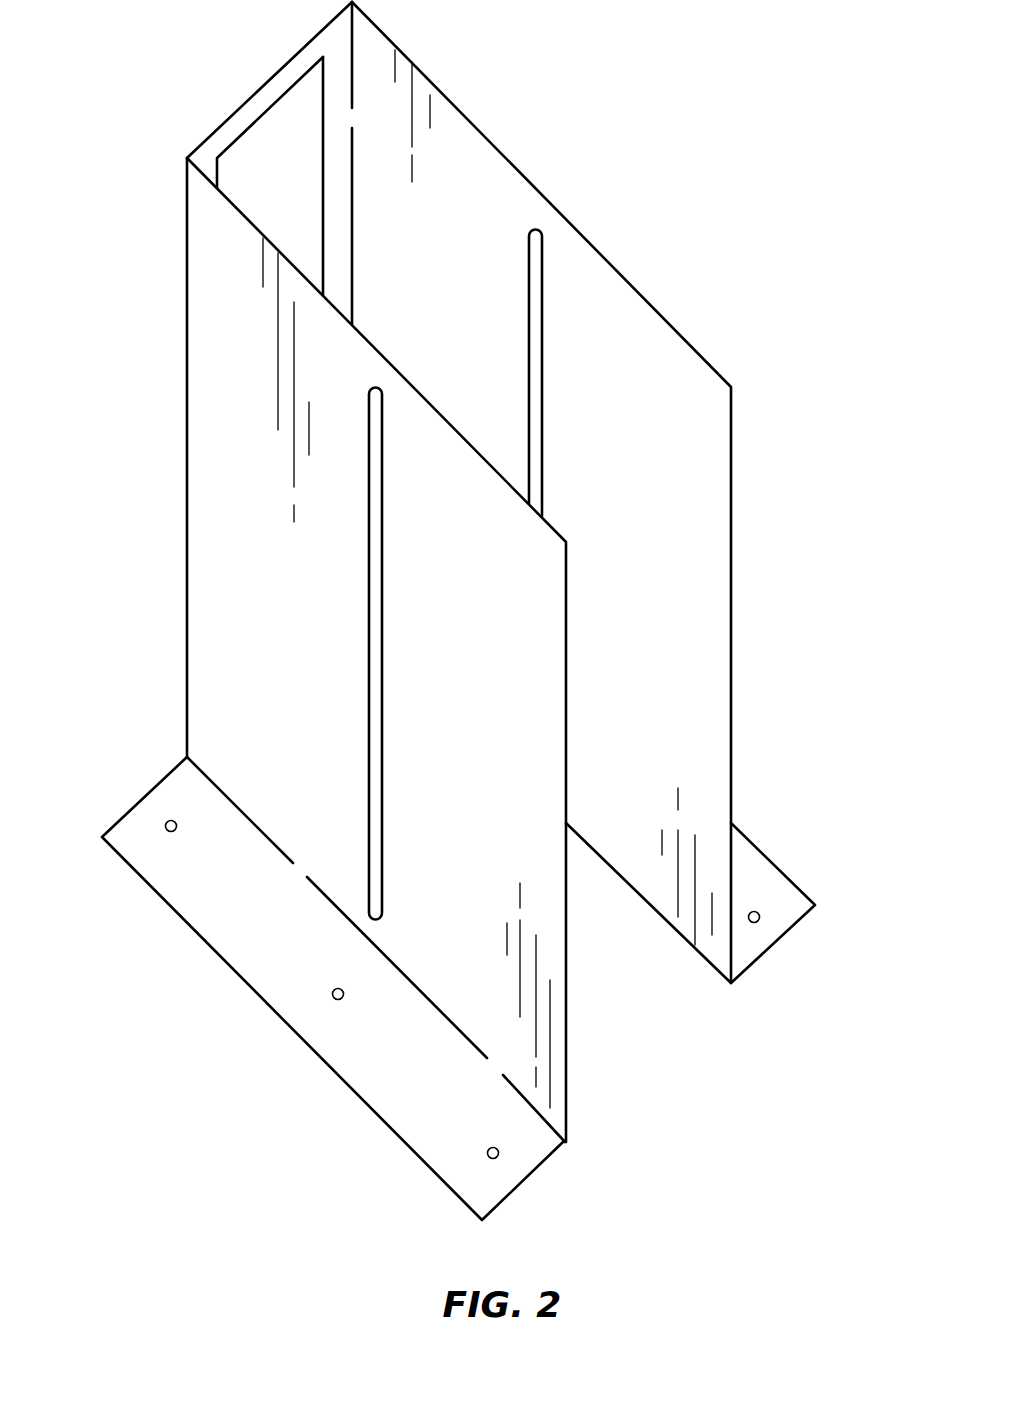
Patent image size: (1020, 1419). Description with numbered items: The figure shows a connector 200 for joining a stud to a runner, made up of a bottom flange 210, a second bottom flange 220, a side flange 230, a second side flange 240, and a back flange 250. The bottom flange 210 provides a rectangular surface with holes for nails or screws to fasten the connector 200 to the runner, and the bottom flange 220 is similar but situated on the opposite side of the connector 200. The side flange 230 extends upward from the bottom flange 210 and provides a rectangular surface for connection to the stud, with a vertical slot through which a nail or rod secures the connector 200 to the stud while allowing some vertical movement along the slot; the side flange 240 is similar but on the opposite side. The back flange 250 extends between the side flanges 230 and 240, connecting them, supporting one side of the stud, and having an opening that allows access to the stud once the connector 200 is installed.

The connector 200 is at (489, 611).
The bottom flange 210 is at (262, 963).
The bottom flange 220 is at (760, 875).
The side flange 230 is at (566, 960).
The side flange 240 is at (733, 467).
The back flange 250 is at (233, 110).